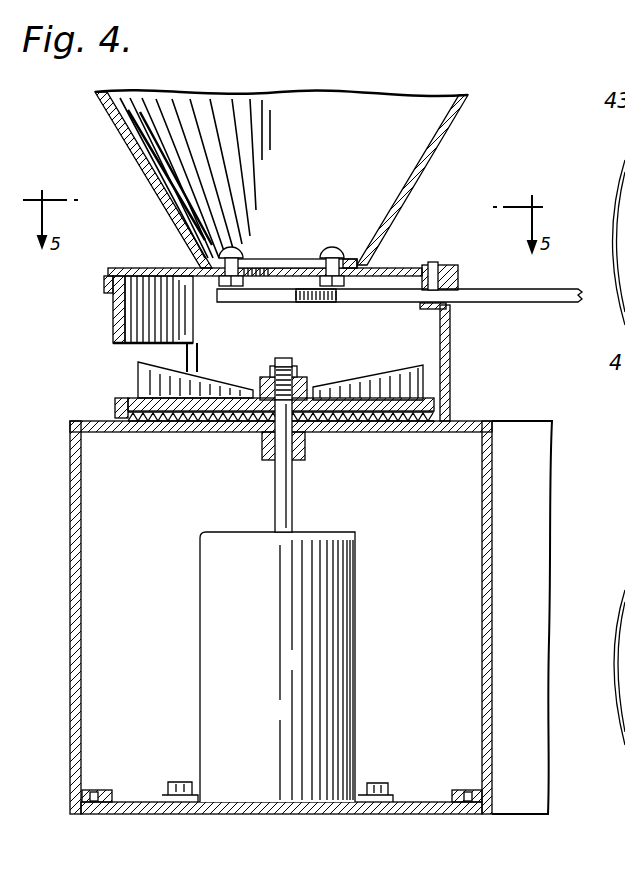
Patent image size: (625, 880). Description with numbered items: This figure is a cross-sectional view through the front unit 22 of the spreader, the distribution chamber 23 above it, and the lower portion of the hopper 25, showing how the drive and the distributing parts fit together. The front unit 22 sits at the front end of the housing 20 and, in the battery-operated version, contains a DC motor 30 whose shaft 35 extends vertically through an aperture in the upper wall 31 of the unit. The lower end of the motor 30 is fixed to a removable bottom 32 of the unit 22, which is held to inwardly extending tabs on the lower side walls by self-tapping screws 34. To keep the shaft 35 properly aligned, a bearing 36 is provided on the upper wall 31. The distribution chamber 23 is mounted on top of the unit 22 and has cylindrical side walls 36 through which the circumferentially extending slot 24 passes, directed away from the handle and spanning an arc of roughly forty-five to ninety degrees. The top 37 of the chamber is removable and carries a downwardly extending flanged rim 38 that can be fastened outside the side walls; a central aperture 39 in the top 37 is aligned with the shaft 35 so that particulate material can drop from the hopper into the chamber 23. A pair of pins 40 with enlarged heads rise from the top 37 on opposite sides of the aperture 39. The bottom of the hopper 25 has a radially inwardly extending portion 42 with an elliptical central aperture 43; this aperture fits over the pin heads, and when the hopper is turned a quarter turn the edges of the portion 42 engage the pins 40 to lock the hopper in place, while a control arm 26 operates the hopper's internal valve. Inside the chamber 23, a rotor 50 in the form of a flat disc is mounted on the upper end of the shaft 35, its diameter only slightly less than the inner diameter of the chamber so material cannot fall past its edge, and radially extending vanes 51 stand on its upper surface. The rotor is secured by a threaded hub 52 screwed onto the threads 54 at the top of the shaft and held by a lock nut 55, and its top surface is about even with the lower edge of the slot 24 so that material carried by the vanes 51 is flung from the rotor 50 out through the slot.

The housing 20 is at (537, 792).
The front unit 22 is at (72, 673).
The distribution chamber 23 is at (450, 373).
The circumferentially extending slot 24 is at (140, 345).
The hopper 25 is at (455, 135).
The control arm 26 is at (531, 300).
The DC motor 30 is at (208, 630).
The upper wall 31 is at (400, 433).
The removable bottom 32 is at (398, 808).
The self-tapping screws 34 is at (90, 814).
The shaft 35 is at (292, 508).
The bearing / cylindrical side walls 36 is at (118, 303).
The top of the chamber 37 is at (148, 266).
The downwardly extending flanged rim 38 is at (106, 279).
The central aperture 39 is at (263, 278).
The pins 40 is at (330, 248).
The radially inwardly extending portion 42 is at (352, 258).
The central aperture 43 is at (265, 261).
The rotor 50 is at (157, 432).
The blades 51 is at (150, 375).
The threaded hub 52 is at (281, 358).
The threads 54 is at (293, 365).
The lock nut 55 is at (297, 372).